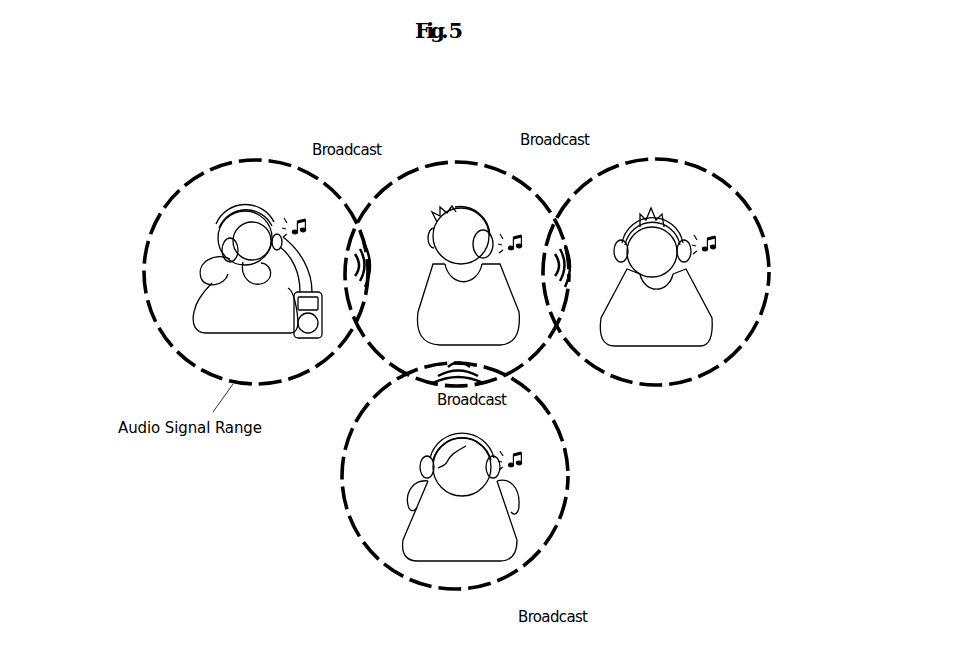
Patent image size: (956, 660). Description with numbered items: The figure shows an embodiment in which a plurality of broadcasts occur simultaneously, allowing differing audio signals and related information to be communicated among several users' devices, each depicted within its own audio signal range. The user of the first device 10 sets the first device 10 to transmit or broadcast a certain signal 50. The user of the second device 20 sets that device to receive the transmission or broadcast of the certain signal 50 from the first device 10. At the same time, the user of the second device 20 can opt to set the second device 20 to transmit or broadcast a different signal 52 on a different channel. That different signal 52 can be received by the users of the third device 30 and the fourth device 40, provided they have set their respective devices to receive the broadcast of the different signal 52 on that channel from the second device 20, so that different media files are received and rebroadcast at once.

The first device 10 is at (222, 250).
The second device 20 is at (485, 236).
The third device 30 is at (691, 253).
The fourth device 40 is at (499, 469).
The certain signal 50 is at (372, 245).
The different signal 52 is at (570, 244).